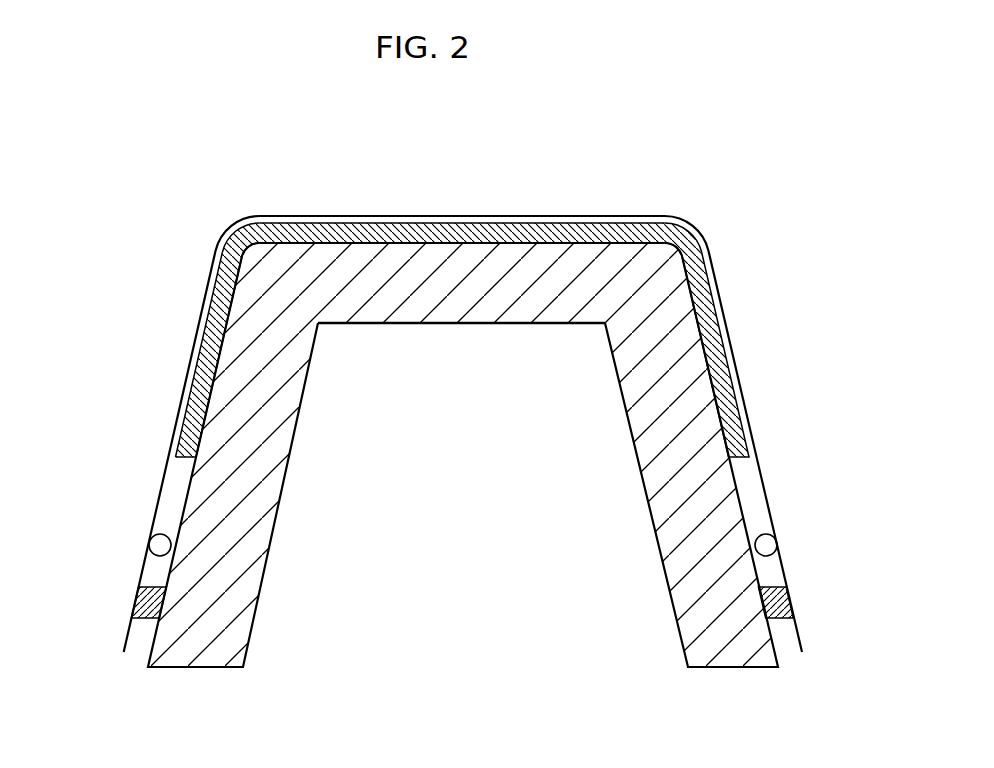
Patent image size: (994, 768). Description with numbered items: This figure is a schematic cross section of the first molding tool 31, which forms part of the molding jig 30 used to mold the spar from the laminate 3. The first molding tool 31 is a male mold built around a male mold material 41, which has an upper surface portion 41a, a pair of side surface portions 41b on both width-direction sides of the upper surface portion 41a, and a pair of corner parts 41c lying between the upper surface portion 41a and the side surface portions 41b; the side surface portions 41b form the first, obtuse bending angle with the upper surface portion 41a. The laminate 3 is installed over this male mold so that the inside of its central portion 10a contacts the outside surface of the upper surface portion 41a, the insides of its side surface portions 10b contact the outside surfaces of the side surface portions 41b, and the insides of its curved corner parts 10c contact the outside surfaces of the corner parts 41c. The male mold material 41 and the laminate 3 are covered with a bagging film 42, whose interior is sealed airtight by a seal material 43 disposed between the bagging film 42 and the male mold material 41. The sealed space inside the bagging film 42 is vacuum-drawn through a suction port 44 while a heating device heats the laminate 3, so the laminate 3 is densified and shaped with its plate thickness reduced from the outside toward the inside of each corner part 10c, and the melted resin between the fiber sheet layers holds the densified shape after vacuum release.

The laminate 3 is at (429, 220).
The central portion 10a is at (497, 233).
The side surface portion 10b is at (205, 337).
The corner part 10c is at (235, 243).
The molding jig 30 is at (464, 392).
The first molding tool 31 is at (684, 194).
The male mold material 41 is at (486, 454).
The upper surface portion 41a is at (515, 315).
The side surface portion 41b is at (260, 537).
The corner part 41c is at (285, 297).
The bagging film 42 is at (777, 497).
The seal material 43 is at (132, 602).
The suction port 44 is at (153, 545).